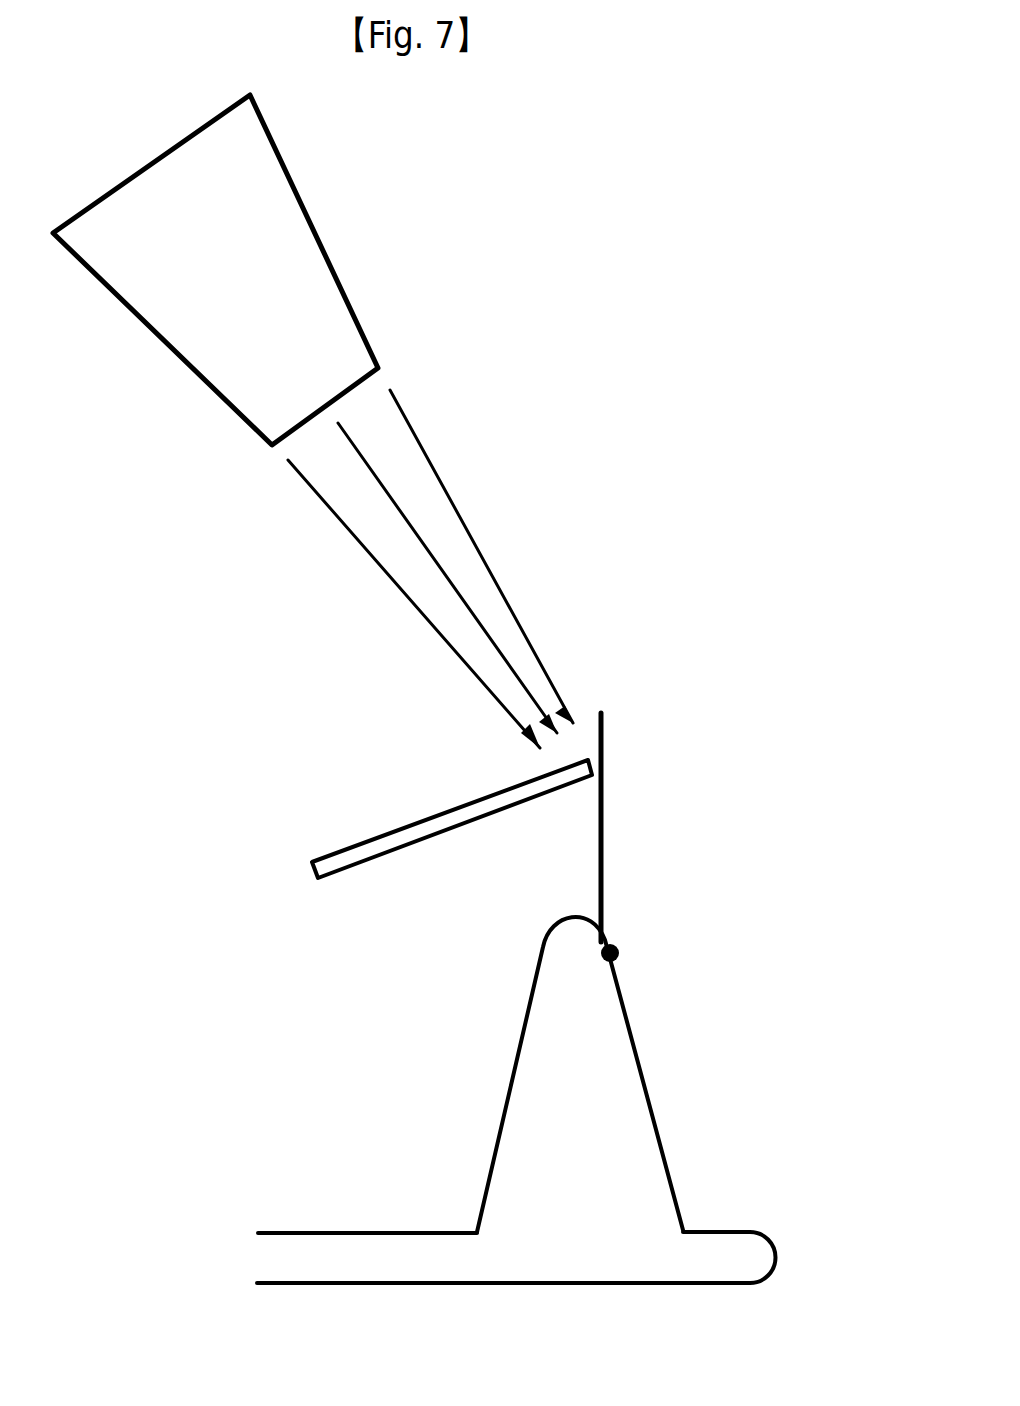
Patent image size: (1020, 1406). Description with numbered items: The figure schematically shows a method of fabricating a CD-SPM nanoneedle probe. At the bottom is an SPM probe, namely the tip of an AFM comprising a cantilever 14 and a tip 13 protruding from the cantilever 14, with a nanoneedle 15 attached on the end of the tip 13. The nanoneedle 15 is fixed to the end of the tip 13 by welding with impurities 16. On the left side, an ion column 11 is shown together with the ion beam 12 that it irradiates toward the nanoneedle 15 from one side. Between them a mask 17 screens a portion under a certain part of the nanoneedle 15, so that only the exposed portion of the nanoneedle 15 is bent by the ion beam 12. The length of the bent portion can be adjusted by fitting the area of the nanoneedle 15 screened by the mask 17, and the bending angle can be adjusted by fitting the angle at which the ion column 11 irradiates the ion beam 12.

The ion column 11 is at (317, 232).
The ion beam 12 is at (492, 570).
The tip 13 is at (627, 1105).
The cantilever 14 is at (360, 1253).
The nanoneedle 15 is at (604, 852).
The impurities 16 is at (620, 958).
The mask 17 is at (405, 833).